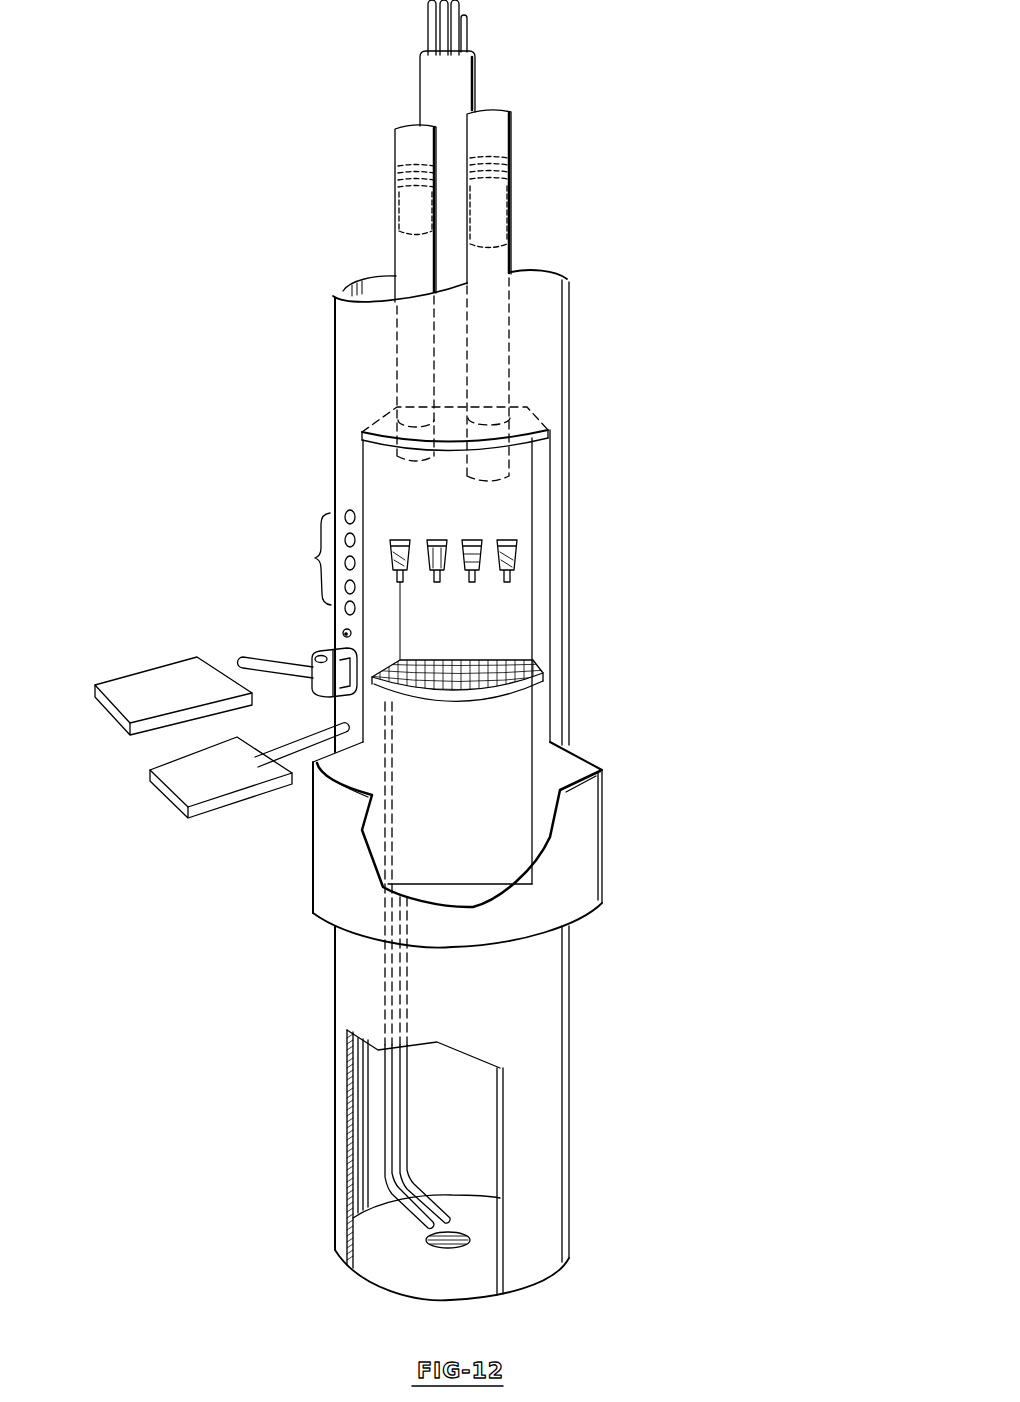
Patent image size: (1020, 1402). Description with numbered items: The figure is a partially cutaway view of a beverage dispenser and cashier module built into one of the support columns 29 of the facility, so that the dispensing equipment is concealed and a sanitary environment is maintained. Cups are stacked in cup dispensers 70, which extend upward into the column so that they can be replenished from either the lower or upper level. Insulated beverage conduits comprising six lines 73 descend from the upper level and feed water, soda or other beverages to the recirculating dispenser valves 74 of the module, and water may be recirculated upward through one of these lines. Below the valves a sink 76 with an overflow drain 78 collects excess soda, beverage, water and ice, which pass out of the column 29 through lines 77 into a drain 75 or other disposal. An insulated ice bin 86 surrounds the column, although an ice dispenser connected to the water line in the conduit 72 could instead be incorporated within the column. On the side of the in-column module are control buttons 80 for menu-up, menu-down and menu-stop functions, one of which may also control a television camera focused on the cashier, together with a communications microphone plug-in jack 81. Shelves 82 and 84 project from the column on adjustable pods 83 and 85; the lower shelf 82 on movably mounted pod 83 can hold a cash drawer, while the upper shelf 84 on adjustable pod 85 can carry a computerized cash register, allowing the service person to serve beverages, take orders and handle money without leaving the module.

The support column 29 is at (611, 1003).
The cup dispenser 70 is at (497, 223).
The conduit 72 is at (458, 78).
The insulated beverage conduit lines 73 is at (452, 39).
The recirculating dispenser valve 74 is at (502, 552).
The drain 75 is at (427, 1240).
The sink 76 is at (567, 665).
The drain lines 77 is at (390, 1103).
The overflow drain 78 is at (343, 632).
The control button 80 is at (316, 556).
The communications microphone plug-in jack 81 is at (343, 642).
The shelf 82 is at (198, 787).
The adjustable pod 83 is at (306, 740).
The shelf 84 is at (168, 687).
The adjustable pod 85 is at (228, 661).
The insulated ice bin 86 is at (578, 838).